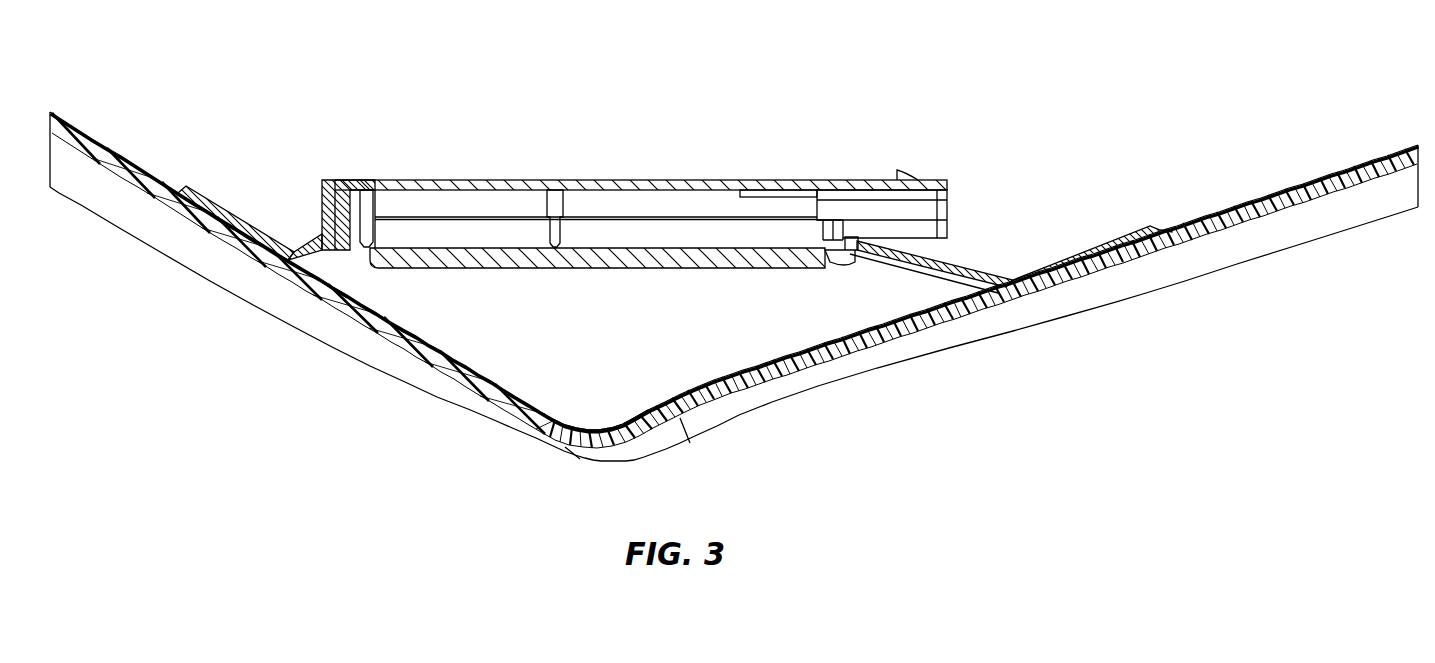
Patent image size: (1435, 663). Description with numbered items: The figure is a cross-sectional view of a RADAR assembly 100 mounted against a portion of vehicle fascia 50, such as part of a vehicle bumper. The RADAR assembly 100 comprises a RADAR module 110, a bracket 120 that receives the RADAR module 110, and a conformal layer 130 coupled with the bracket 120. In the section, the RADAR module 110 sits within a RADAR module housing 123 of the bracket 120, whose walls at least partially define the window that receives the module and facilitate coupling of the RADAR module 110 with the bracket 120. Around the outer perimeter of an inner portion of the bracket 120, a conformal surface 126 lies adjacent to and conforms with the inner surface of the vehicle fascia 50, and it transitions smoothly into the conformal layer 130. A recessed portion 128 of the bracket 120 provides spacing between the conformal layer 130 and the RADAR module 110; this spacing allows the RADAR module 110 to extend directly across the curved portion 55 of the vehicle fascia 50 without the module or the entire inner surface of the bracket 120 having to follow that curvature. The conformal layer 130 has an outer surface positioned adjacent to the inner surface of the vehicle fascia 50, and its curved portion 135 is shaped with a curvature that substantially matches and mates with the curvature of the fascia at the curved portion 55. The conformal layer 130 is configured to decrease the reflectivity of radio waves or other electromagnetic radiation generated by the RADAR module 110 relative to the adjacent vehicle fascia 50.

The vehicle fascia 50 is at (1345, 195).
The curved portion 55 is at (627, 439).
The RADAR assembly 100 is at (1080, 79).
The RADAR module 110 is at (621, 166).
The bracket 120 is at (999, 256).
The RADAR module housing 123 is at (322, 201).
The conformal surface 126 is at (219, 209).
The recessed portion 128 is at (620, 333).
The conformal layer 130 is at (884, 319).
The curved portion 135 is at (605, 426).